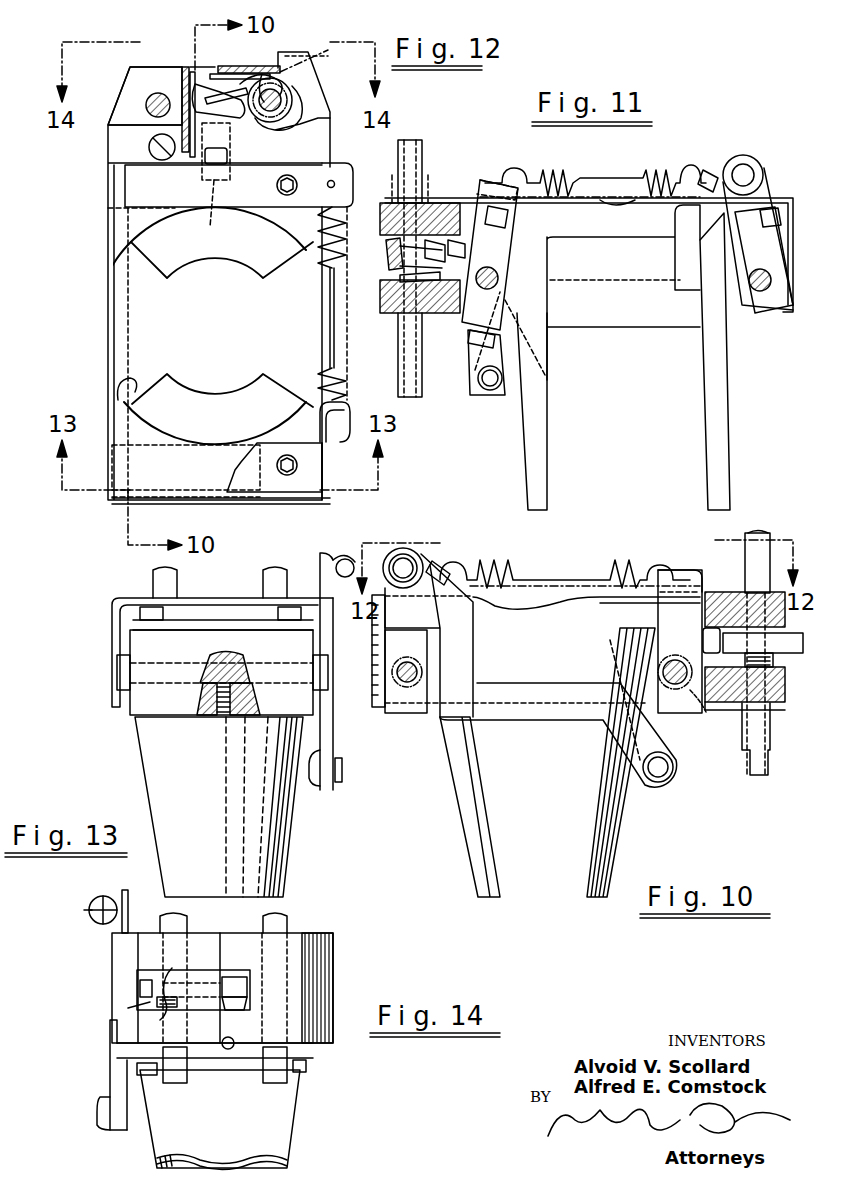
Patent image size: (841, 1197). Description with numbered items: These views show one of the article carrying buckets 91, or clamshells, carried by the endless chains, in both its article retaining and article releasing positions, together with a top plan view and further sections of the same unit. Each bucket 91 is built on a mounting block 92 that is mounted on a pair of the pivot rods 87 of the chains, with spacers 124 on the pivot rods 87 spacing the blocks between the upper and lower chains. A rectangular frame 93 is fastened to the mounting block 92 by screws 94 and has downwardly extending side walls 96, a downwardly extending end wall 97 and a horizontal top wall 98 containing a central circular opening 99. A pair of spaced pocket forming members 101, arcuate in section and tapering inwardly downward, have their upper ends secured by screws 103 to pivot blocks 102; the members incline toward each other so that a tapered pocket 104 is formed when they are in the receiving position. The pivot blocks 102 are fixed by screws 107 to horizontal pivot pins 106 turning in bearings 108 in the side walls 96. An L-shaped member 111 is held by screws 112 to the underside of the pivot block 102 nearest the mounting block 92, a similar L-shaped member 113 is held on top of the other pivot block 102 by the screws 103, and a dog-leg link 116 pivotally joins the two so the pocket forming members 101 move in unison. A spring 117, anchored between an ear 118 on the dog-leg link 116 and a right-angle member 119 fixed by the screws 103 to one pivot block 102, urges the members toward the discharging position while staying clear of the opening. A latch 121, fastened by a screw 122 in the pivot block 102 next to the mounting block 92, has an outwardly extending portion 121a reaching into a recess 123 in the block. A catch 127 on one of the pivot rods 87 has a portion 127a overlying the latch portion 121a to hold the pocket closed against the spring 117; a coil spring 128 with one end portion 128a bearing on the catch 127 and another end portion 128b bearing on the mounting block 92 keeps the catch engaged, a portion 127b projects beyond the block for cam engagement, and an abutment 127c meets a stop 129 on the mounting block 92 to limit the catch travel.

In FIG. 12, the pivot rods 87 is at (152, 90).
In FIG. 11, the pivot rods 87 is at (426, 150).
In FIG. 10, the pivot rods 87 is at (752, 762).
In FIG. 13, the pivot rods 87 is at (272, 580).
In FIG. 14, the pivot rods 87 is at (268, 1073).
In FIG. 12, the bucket 91 is at (98, 344).
In FIG. 12, the mounting block 92 is at (137, 112).
In FIG. 11, the mounting block 92 is at (430, 325).
In FIG. 10, the mounting block 92 is at (735, 712).
In FIG. 14, the mounting block 92 is at (318, 962).
In FIG. 12, the rectangular frame 93 is at (104, 298).
In FIG. 11, the rectangular frame 93 is at (633, 239).
In FIG. 10, the rectangular frame 93 is at (551, 633).
In FIG. 13, the rectangular frame 93 is at (104, 622).
In FIG. 12, the screws 94 is at (150, 158).
In FIG. 12, the side walls 96 is at (112, 323).
In FIG. 11, the side walls 96 is at (626, 208).
In FIG. 10, the side walls 96 is at (562, 608).
In FIG. 13, the side walls 96 is at (112, 648).
In FIG. 12, the end wall 97 is at (285, 504).
In FIG. 10, the end wall 97 is at (375, 715).
In FIG. 12, the top wall 98 is at (183, 474).
In FIG. 13, the top wall 98 is at (140, 598).
In FIG. 12, the circular opening 99 is at (124, 380).
In FIG. 12, the pocket forming members 101 is at (222, 252).
In FIG. 11, the pocket forming members 101 is at (548, 478).
In FIG. 10, the pocket forming members 101 is at (480, 845).
In FIG. 13, the pocket forming members 101 is at (278, 850).
In FIG. 14, the pocket forming members 101 is at (280, 1118).
In FIG. 12, the pivot blocks 102 is at (274, 467).
In FIG. 11, the pivot blocks 102 is at (498, 255).
In FIG. 10, the pivot blocks 102 is at (413, 650).
In FIG. 13, the pivot blocks 102 is at (185, 700).
In FIG. 12, the screws 103 is at (278, 188).
In FIG. 11, the screws 103 is at (510, 218).
In FIG. 13, the screws 103 is at (280, 613).
In FIG. 12, the tapered pockets 104 is at (232, 336).
In FIG. 10, the tapered pockets 104 is at (555, 797).
In FIG. 11, the pivot pins 106 is at (494, 276).
In FIG. 10, the pivot pins 106 is at (407, 682).
In FIG. 13, the pivot pins 106 is at (225, 668).
In FIG. 13, the screws 107 is at (228, 716).
In FIG. 10, the bearings 108 is at (426, 666).
In FIG. 13, the bearings 108 is at (122, 674).
In FIG. 11, the L-shaped member 111 is at (468, 393).
In FIG. 10, the L-shaped member 111 is at (680, 723).
In FIG. 13, the L-shaped member 111 is at (320, 772).
In FIG. 14, the L-shaped member 111 is at (130, 1080).
In FIG. 11, the screws 112 is at (468, 352).
In FIG. 14, the screws 112 is at (147, 1075).
In FIG. 12, the L-shaped member 113 is at (300, 500).
In FIG. 11, the L-shaped member 113 is at (757, 176).
In FIG. 10, the L-shaped member 113 is at (410, 620).
In FIG. 13, the L-shaped member 113 is at (338, 562).
In FIG. 14, the L-shaped member 113 is at (128, 900).
In FIG. 12, the dog-leg link 116 is at (328, 316).
In FIG. 11, the dog-leg link 116 is at (624, 315).
In FIG. 10, the dog-leg link 116 is at (551, 711).
In FIG. 13, the dog-leg link 116 is at (338, 748).
In FIG. 14, the dog-leg link 116 is at (108, 1062).
In FIG. 12, the spring 117 is at (352, 374).
In FIG. 11, the spring 117 is at (666, 172).
In FIG. 10, the spring 117 is at (352, 560).
In FIG. 14, the spring 117 is at (95, 902).
In FIG. 12, the ear 118 is at (342, 444).
In FIG. 11, the ear 118 is at (712, 170).
In FIG. 10, the ear 118 is at (385, 556).
In FIG. 12, the right-angle member 119 is at (342, 168).
In FIG. 11, the right-angle member 119 is at (483, 178).
In FIG. 10, the right-angle member 119 is at (690, 586).
In FIG. 14, the right-angle member 119 is at (90, 914).
In FIG. 12, the latch 121 is at (208, 206).
In FIG. 10, the latch 121 is at (702, 678).
In FIG. 12, the outwardly extending portion 121a is at (219, 151).
In FIG. 11, the outwardly extending portion 121a is at (482, 321).
In FIG. 14, the outwardly extending portion 121a is at (238, 1010).
In FIG. 12, the screw 122 is at (228, 160).
In FIG. 11, the screw 122 is at (468, 240).
In FIG. 10, the screw 122 is at (703, 640).
In FIG. 12, the recess 123 is at (196, 72).
In FIG. 11, the recess 123 is at (430, 238).
In FIG. 11, the spacers 124 is at (426, 175).
In FIG. 10, the spacers 124 is at (765, 560).
In FIG. 12, the catch 127 is at (262, 132).
In FIG. 10, the catch 127 is at (763, 643).
In FIG. 14, the catch 127 is at (132, 988).
In FIG. 12, the portion 127a is at (212, 84).
In FIG. 11, the portion 127a is at (396, 238).
In FIG. 14, the portion 127a is at (236, 976).
In FIG. 10, the portion 127b is at (790, 645).
In FIG. 14, the portion 127b is at (140, 985).
In FIG. 12, the abutment 127c is at (271, 74).
In FIG. 14, the abutment 127c is at (174, 966).
In FIG. 10, the coil spring 128 is at (762, 668).
In FIG. 14, the coil spring 128 is at (150, 1002).
In FIG. 12, the end portion 128a is at (252, 108).
In FIG. 11, the end portion 128a is at (398, 248).
In FIG. 12, the end portion 128b is at (243, 74).
In FIG. 11, the end portion 128b is at (398, 280).
In FIG. 14, the end portion 128b is at (228, 1004).
In FIG. 12, the stop 129 is at (274, 74).
In FIG. 14, the stop 129 is at (125, 1008).